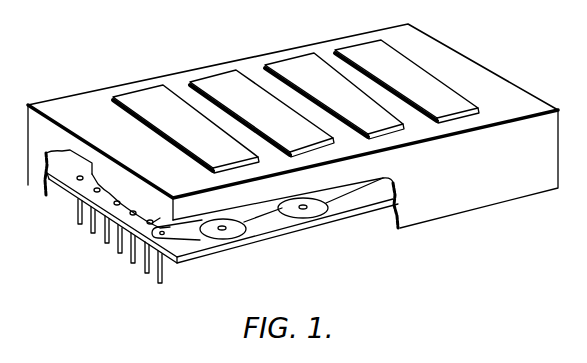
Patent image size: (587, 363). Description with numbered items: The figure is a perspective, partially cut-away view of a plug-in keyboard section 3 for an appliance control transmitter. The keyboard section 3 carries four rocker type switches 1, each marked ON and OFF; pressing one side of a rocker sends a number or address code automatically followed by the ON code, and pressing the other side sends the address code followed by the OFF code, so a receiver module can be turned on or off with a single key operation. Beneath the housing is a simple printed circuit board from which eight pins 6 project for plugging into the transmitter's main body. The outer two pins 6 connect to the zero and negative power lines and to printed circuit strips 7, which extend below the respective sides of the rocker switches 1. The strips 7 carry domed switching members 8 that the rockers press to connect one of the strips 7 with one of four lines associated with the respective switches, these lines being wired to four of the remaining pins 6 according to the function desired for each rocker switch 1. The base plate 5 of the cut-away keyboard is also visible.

The rocker type switches 1 is at (184, 70).
The keyboard section 3 is at (502, 66).
The lead frame plate 5 is at (206, 256).
The pins 6 is at (140, 279).
The printed circuit strips 7 is at (90, 170).
The domed switching members 8 is at (242, 228).